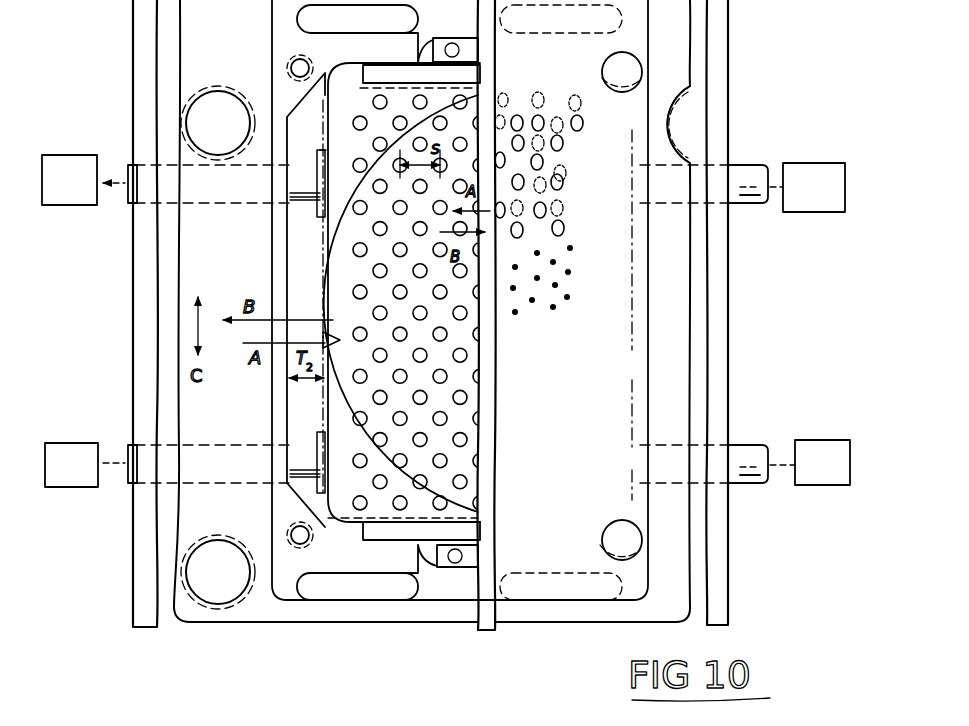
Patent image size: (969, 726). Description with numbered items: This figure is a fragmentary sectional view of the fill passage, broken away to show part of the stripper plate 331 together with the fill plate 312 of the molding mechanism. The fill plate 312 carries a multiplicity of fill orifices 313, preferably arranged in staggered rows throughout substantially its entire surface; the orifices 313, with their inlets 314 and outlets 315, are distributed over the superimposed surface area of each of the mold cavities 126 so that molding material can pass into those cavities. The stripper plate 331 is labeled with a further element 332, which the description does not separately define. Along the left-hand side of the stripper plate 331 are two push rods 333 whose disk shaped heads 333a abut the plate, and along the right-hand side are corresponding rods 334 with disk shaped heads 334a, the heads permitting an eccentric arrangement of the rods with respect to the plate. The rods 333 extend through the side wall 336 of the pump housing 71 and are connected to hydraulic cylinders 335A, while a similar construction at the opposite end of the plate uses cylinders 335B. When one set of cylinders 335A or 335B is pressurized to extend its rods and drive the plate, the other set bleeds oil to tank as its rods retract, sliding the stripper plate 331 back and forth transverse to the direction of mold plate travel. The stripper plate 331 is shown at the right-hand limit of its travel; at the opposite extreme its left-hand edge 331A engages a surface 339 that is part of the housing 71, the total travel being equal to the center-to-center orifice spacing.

The pump housing 71 is at (282, 614).
The mold cavities 126 is at (343, 400).
The fill plate 312 is at (627, 240).
The fill orifices 313 is at (570, 228).
The inlets 314 is at (735, 50).
The outlets 315 is at (735, 85).
The stripper plate 331 is at (338, 308).
The left-hand edge of the stripper plate 331A is at (322, 240).
The hole 332 is at (375, 441).
The push rods 333 is at (320, 200).
The disk shaped heads 333a is at (320, 150).
The push rods 334 is at (757, 172).
The disk shaped heads 334a is at (758, 116).
The hydraulic cylinders 335A is at (76, 208).
The hydraulic cylinders 335B is at (818, 214).
The side wall 336 is at (200, 622).
The surface 339 is at (295, 288).